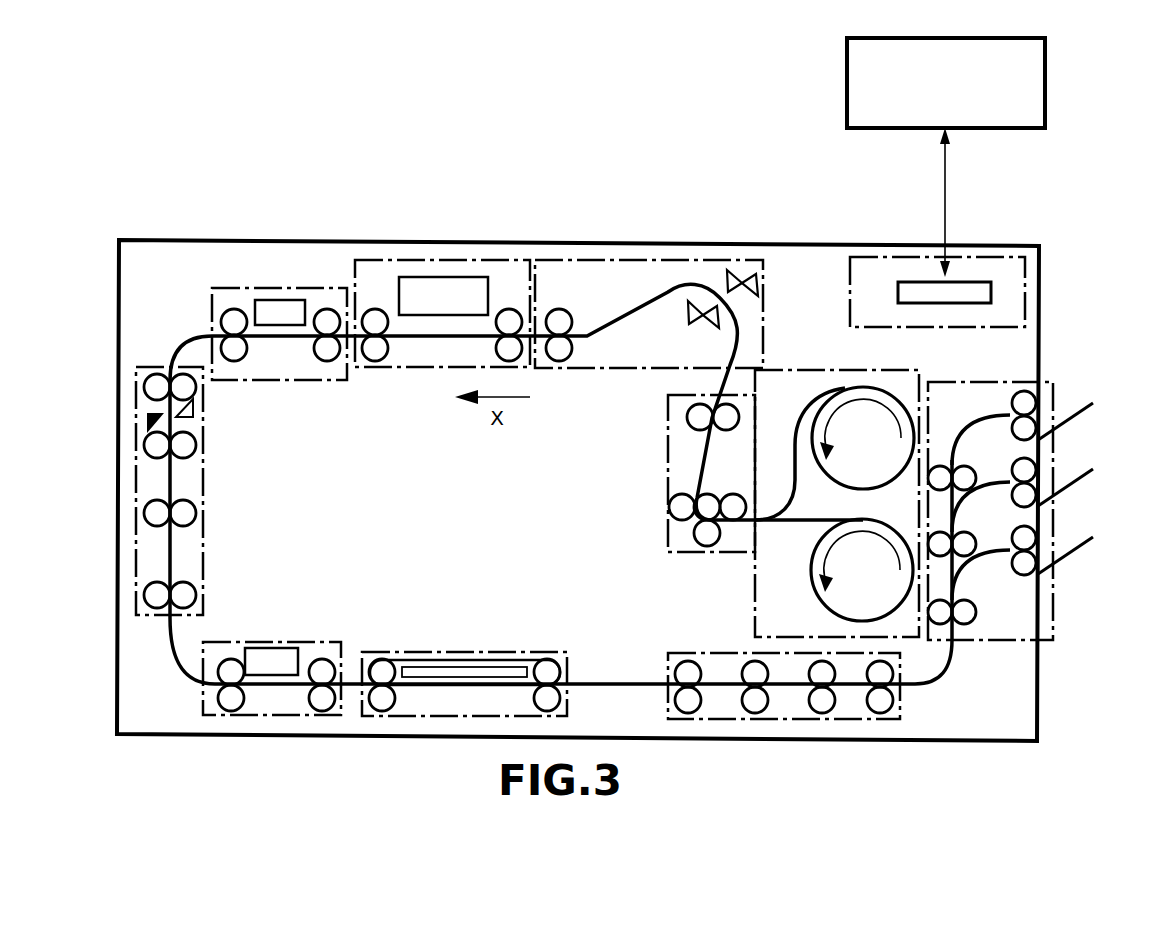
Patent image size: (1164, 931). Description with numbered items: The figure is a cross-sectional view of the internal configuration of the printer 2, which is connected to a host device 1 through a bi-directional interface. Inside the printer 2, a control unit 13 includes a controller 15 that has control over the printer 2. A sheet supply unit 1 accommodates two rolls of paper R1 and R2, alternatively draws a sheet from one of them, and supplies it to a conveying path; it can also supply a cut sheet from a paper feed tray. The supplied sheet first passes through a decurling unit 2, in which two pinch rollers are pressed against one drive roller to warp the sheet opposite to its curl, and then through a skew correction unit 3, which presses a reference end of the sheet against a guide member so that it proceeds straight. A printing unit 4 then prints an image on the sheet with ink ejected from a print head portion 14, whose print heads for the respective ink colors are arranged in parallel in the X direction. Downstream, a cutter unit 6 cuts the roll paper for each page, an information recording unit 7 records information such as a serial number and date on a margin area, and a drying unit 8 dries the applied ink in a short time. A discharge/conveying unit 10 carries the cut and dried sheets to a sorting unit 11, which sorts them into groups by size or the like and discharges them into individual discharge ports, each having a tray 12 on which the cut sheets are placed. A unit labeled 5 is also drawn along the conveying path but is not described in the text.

The sheet supply unit 1 is at (926, 337).
The decurling unit 2 is at (167, 240).
The skew correction unit 3 is at (590, 368).
The printing unit 4 is at (442, 346).
The inspection unit 5 is at (282, 382).
The cutter unit 6 is at (205, 490).
The information recording unit 7 is at (272, 642).
The drying unit 8 is at (392, 650).
The discharge/conveying unit 10 is at (717, 651).
The sorting unit 11 is at (1055, 612).
The tray 12 is at (1103, 392).
The control unit 13 is at (909, 291).
The print head portion 14 is at (402, 302).
The controller 15 is at (898, 294).
The roll of paper R1 is at (872, 478).
The roll of paper R2 is at (819, 572).